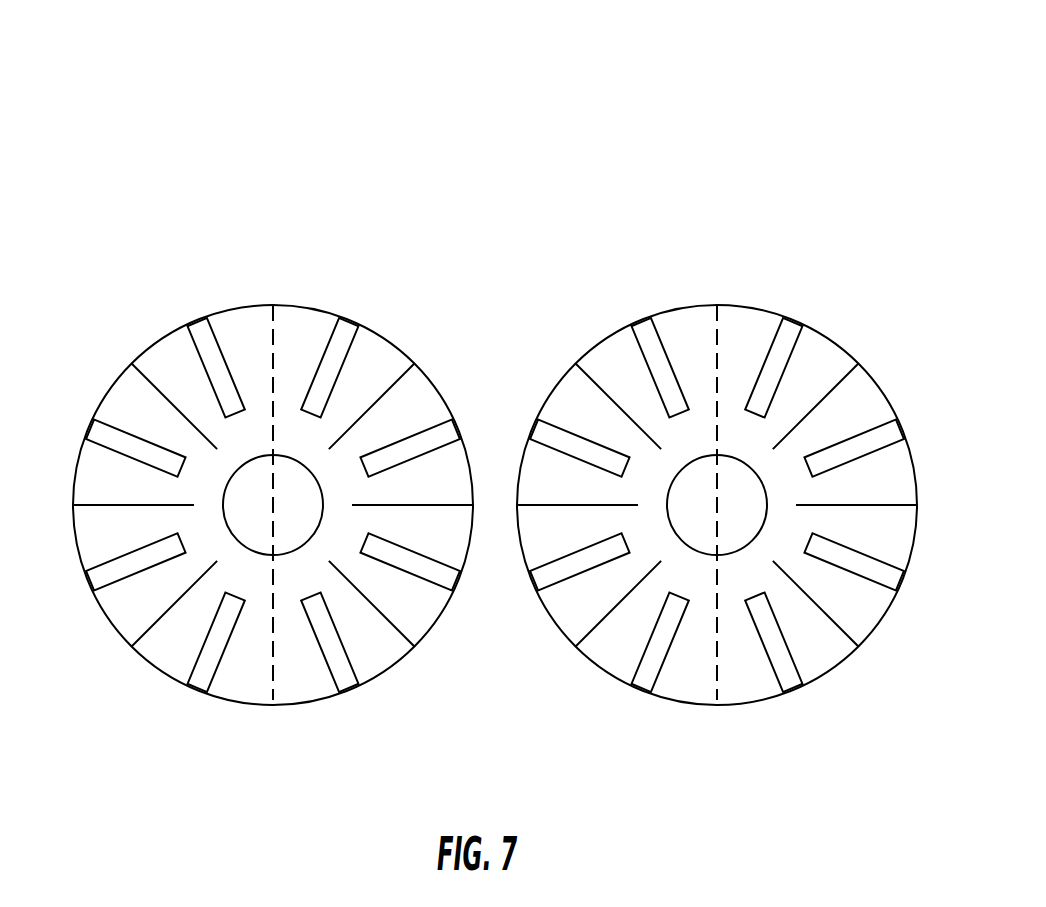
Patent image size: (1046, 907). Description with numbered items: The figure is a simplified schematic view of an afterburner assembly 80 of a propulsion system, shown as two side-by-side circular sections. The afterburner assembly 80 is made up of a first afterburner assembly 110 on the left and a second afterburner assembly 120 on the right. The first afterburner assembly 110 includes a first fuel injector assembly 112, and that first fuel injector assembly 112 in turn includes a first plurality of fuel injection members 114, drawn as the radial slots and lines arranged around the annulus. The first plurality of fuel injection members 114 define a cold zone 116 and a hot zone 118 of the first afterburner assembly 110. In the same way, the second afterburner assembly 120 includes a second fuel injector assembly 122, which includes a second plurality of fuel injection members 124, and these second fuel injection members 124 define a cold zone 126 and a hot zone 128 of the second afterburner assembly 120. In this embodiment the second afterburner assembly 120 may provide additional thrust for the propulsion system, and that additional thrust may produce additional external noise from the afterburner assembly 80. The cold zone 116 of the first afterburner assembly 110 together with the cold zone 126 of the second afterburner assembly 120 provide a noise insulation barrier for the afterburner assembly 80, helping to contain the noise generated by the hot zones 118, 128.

The afterburner assembly 80 is at (572, 60).
The first afterburner assembly 110 is at (153, 153).
The first fuel injector assembly 112 is at (359, 294).
The first plurality of fuel injection members 114 is at (155, 382).
The cold zone 116 is at (137, 599).
The hot zone 118 is at (408, 605).
The second afterburner assembly 120 is at (833, 210).
The second fuel injector assembly 122 is at (898, 337).
The second plurality of fuel injection members 124 is at (598, 382).
The cold zone 126 is at (843, 529).
The hot zone 128 is at (640, 552).